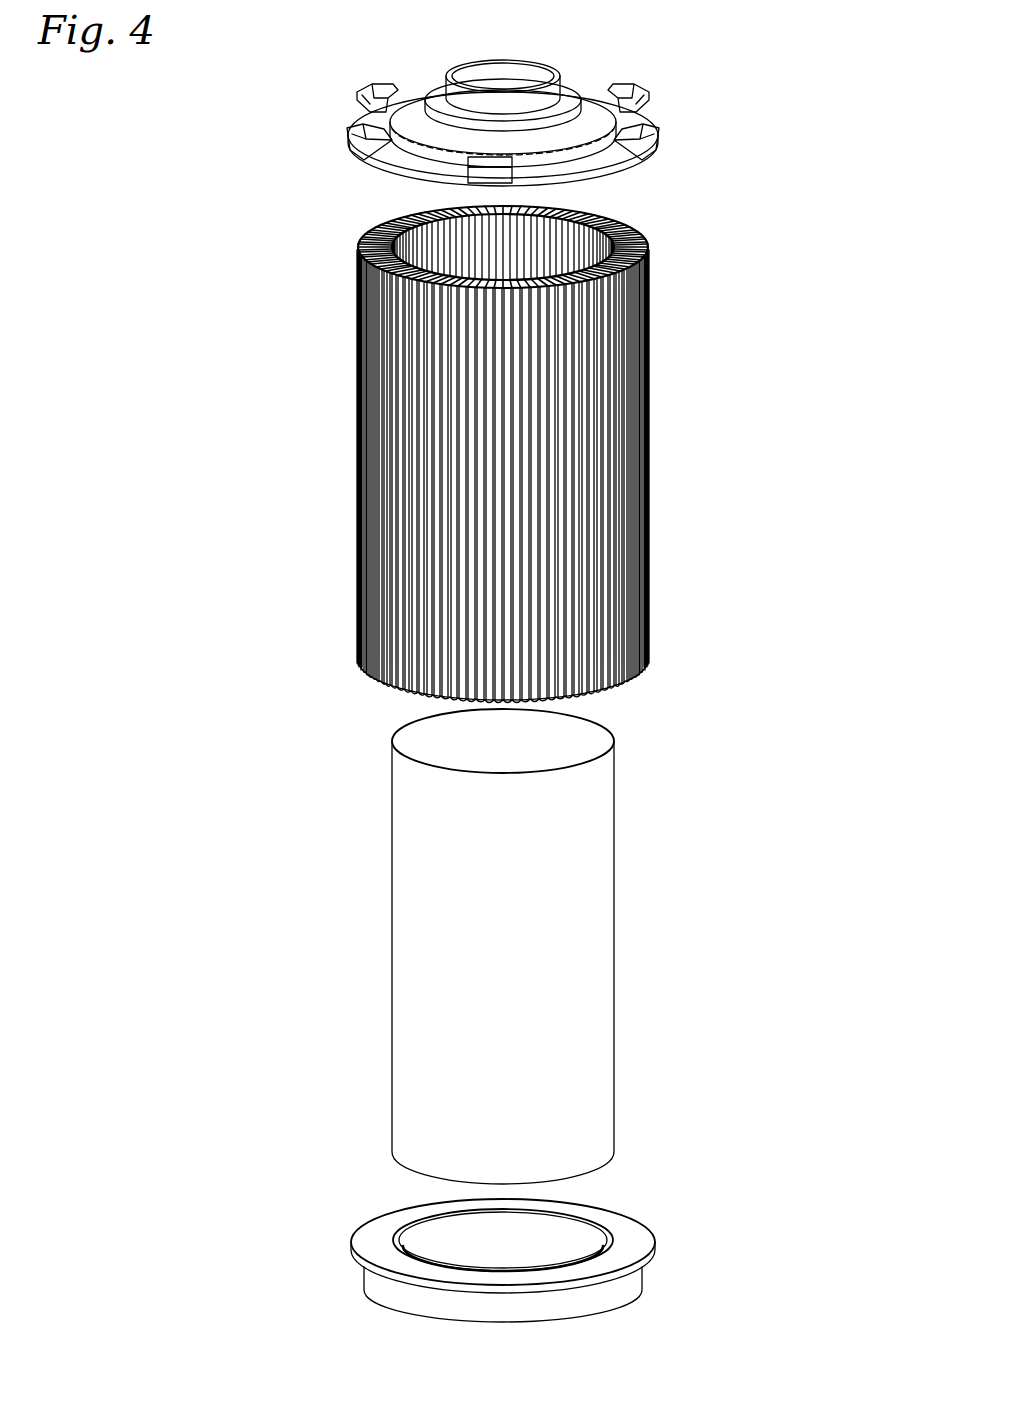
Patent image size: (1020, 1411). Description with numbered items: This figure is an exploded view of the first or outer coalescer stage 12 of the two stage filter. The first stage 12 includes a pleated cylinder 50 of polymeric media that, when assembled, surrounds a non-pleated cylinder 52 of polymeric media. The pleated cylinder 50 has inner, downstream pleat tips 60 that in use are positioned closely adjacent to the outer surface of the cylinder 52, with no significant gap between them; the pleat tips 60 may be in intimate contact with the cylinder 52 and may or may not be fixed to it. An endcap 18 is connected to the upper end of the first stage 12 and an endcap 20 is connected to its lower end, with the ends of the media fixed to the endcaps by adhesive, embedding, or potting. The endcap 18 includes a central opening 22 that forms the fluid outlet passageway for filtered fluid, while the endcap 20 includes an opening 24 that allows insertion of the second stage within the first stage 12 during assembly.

The first or outer coalescer stage 12 is at (720, 518).
The endcap 18 is at (648, 133).
The endcap 20 is at (636, 1218).
The central opening 22 is at (509, 75).
The opening 24 is at (470, 1262).
The pleated cylinder 50 is at (648, 422).
The non-pleated cylinder 52 is at (614, 878).
The inner pleat tips 60 is at (462, 238).